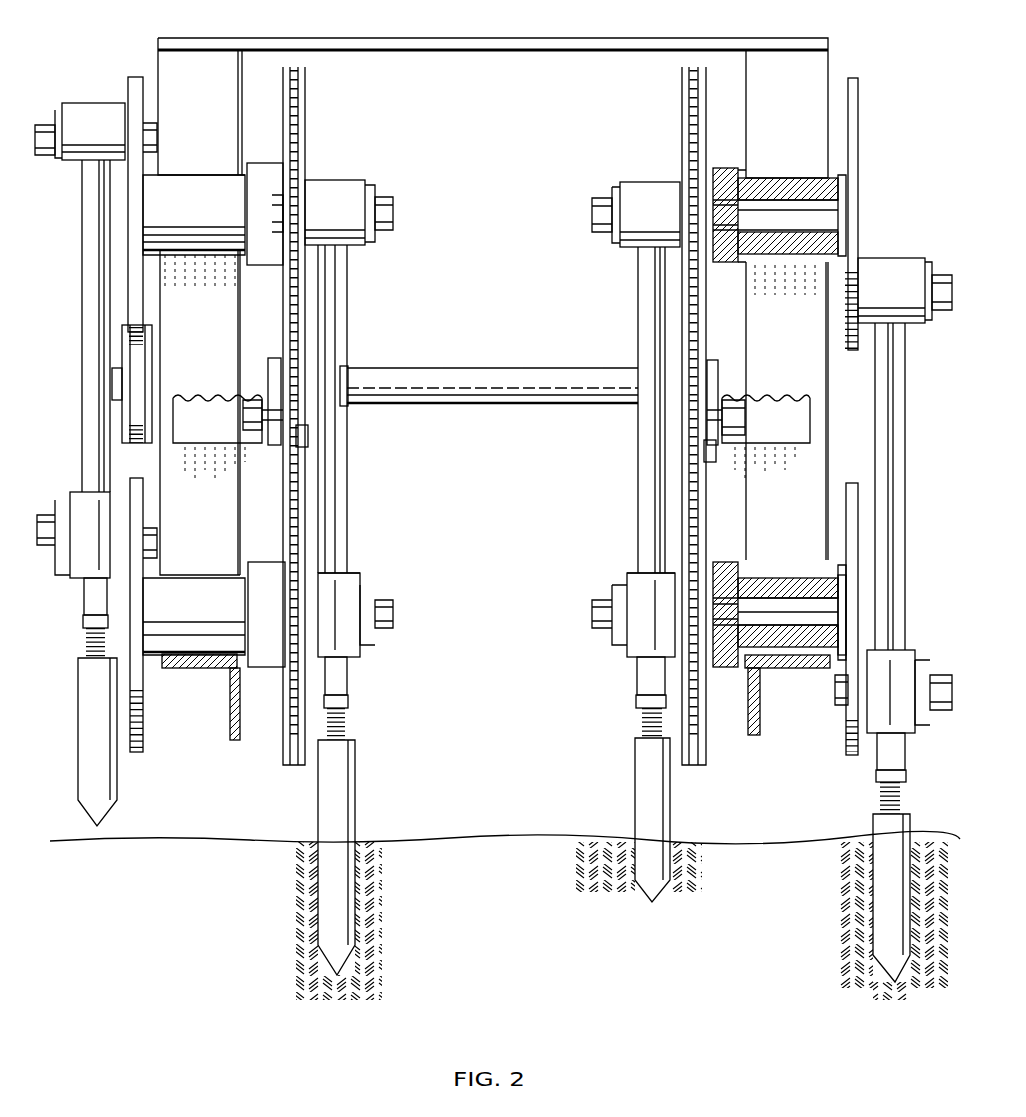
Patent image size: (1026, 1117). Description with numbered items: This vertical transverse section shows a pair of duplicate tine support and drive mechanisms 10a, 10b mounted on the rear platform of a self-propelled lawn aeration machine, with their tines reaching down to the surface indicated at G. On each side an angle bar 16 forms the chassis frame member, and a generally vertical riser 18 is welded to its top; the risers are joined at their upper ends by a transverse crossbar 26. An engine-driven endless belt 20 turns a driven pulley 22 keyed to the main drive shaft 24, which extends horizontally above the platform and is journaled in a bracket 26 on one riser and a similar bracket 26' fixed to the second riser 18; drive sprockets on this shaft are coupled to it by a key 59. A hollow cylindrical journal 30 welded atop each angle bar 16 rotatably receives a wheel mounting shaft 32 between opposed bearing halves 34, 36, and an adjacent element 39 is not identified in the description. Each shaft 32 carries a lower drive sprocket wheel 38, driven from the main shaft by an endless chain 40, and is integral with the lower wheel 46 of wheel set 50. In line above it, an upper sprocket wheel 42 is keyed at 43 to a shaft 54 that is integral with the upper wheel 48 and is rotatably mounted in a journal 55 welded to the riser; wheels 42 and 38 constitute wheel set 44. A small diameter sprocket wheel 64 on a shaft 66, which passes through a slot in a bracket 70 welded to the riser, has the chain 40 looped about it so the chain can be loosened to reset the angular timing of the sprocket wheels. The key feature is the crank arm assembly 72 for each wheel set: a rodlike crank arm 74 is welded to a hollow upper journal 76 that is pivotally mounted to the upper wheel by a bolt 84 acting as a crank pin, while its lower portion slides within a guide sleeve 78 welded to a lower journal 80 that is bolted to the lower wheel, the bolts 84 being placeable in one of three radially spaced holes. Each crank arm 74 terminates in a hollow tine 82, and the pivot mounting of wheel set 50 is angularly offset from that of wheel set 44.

The tine support and drive mechanism 10a is at (378, 303).
The tine support and drive mechanism 10b is at (612, 318).
The angle bar 16 is at (202, 668).
The vertical riser 18 is at (225, 542).
The endless belt 20 is at (133, 375).
The driven pulley 22 is at (152, 338).
The main drive shaft 24 is at (460, 388).
The transverse crossbar 26 is at (493, 225).
The bracket 26' is at (728, 381).
The cylindrical journal 30 is at (808, 560).
The wheel mounting shaft 32 is at (772, 592).
The bearing half 34 is at (742, 568).
The bearing half 36 is at (843, 578).
The lower drive sprocket wheel 38 is at (283, 752).
The bearing block 39 is at (732, 655).
The endless chain 40 is at (348, 522).
The upper sprocket wheel 42 is at (306, 122).
The key 43 is at (732, 212).
The wheel set 44 is at (322, 157).
The lower wheel 46 is at (143, 733).
The upper wheel 48 is at (145, 216).
The wheel set 50 is at (872, 188).
The shaft 54 is at (765, 205).
The journal 55 is at (757, 281).
The key 59 is at (348, 366).
The small diameter sprocket wheel 64 is at (348, 434).
The shaft 66 is at (243, 415).
The bracket 70 is at (213, 435).
The crank arm assembly 72 is at (82, 238).
The crank arm 74 is at (92, 278).
The upper journal 76 is at (97, 117).
The guide sleeve 78 is at (90, 495).
The lower journal 80 is at (58, 556).
The tine 82 is at (356, 805).
The bolt 84 is at (150, 122).
The ground G is at (462, 852).